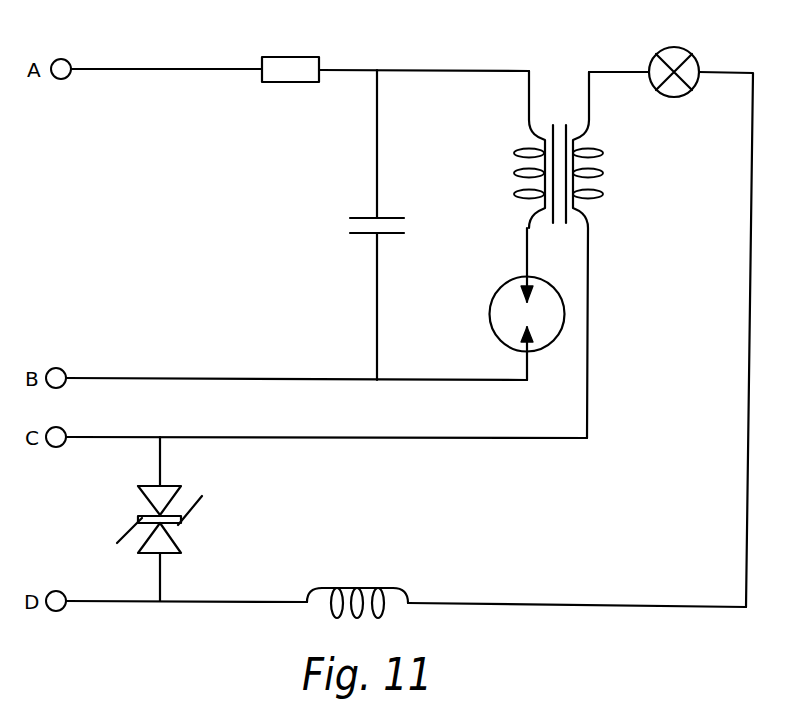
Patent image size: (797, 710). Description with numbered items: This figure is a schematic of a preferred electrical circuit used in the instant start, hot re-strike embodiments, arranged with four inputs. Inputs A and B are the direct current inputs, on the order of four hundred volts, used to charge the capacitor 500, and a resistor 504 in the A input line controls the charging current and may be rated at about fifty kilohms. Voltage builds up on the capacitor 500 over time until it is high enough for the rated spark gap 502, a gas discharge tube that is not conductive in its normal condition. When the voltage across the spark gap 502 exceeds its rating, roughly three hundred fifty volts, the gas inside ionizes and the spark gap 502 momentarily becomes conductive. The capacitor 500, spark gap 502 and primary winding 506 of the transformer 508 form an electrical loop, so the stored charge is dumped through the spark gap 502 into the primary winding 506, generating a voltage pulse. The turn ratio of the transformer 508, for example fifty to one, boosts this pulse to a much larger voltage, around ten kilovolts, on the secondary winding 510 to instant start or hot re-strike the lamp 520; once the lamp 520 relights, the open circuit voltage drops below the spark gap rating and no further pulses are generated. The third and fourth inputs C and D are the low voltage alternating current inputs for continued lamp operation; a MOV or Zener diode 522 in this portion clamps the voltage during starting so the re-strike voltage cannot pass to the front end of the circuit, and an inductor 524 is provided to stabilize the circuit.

The capacitor 500 is at (342, 230).
The spark gap 502 is at (497, 283).
The resistor 504 is at (292, 83).
The primary winding 506 is at (514, 153).
The transformer 508 is at (559, 122).
The secondary winding 510 is at (603, 184).
The lamp 520 is at (681, 50).
The MOV or Zener diode 522 is at (190, 528).
The inductor 524 is at (368, 588).